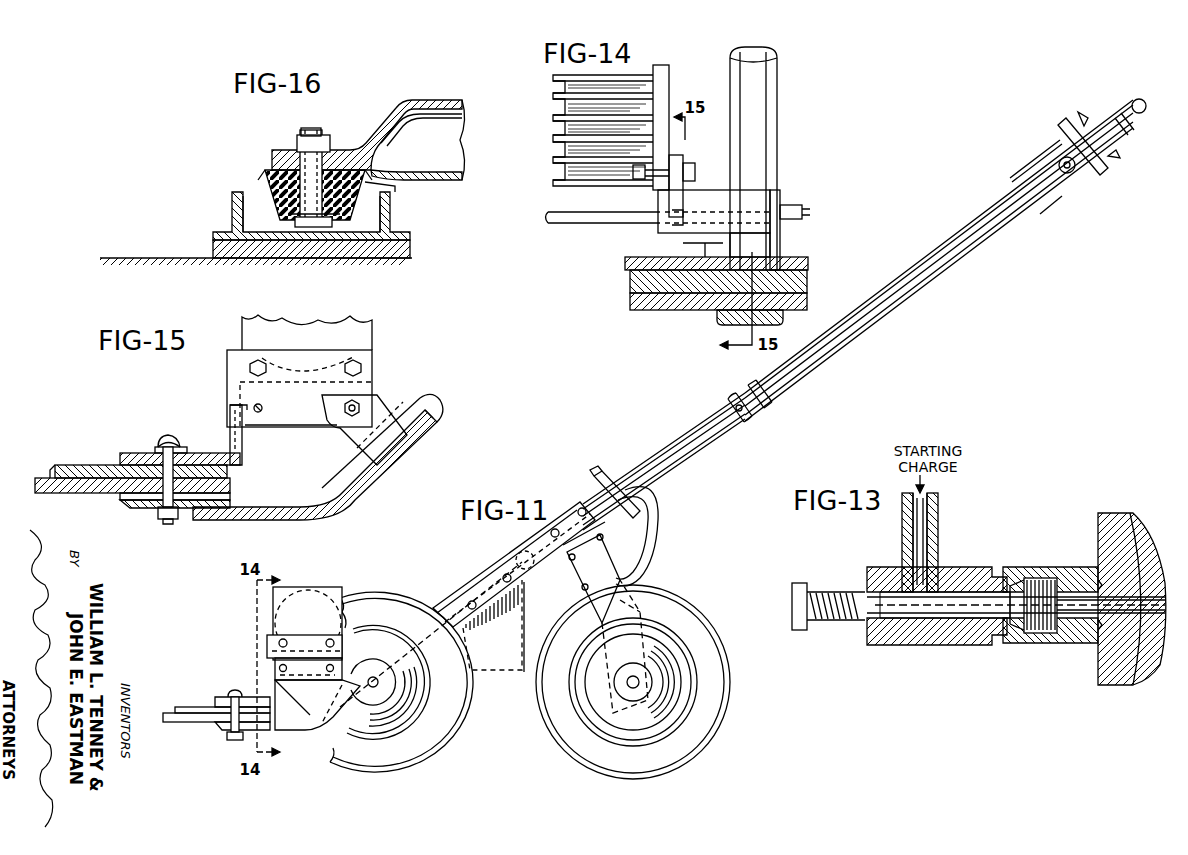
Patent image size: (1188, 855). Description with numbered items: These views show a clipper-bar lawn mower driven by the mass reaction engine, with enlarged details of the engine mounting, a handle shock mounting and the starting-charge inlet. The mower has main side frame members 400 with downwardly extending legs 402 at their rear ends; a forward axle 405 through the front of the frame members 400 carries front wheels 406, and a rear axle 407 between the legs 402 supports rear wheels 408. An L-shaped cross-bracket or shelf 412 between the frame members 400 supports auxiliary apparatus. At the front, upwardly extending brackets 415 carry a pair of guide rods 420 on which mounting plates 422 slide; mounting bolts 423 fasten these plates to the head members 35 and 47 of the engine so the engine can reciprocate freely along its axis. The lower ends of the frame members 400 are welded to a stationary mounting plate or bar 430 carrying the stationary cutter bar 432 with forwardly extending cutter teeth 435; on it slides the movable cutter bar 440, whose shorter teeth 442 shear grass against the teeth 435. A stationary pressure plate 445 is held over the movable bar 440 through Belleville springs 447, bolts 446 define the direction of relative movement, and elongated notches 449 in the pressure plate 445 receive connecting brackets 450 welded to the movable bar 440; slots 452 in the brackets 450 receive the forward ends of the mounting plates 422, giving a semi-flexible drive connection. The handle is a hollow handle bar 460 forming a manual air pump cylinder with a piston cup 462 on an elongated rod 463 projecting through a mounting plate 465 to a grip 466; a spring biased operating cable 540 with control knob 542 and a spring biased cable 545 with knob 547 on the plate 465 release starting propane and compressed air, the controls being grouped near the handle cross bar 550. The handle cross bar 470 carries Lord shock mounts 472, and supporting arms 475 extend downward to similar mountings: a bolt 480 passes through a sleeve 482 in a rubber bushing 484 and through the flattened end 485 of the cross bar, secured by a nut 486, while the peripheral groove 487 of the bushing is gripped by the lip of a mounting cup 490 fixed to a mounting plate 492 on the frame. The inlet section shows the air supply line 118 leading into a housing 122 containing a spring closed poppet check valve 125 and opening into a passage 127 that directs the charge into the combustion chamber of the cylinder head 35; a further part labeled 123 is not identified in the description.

In FIG. 13, the cylinder head member 35 is at (1112, 690).
In FIG. 14, the head member 47 is at (666, 80).
In FIG. 11, the head member 47 is at (322, 590).
In FIG. 13, the air supply line 118 is at (939, 521).
In FIG. 13, the housing 122 is at (955, 646).
In FIG. 13, the threaded plug 123 is at (1072, 610).
In FIG. 13, the spring closed poppet type check valve 125 is at (1024, 579).
In FIG. 13, the passage 127 is at (1133, 514).
In FIG. 14, the main side frame members 400 is at (764, 103).
In FIG. 15, the main side frame members 400 is at (424, 434).
In FIG. 11, the main side frame members 400 is at (494, 572).
In FIG. 11, the downwardly extending legs 402 is at (612, 562).
In FIG. 11, the forward axle 405 is at (380, 684).
In FIG. 11, the front wheels 406 is at (445, 733).
In FIG. 11, the rear axle 407 is at (640, 682).
In FIG. 11, the rear wheels 408 is at (703, 725).
In FIG. 11, the cross-bracket or shelf 412 is at (497, 664).
In FIG. 14, the upwardly extending brackets 415 is at (790, 236).
In FIG. 15, the upwardly extending brackets 415 is at (384, 413).
In FIG. 11, the upwardly extending brackets 415 is at (307, 722).
In FIG. 14, the guide rods 420 is at (580, 224).
In FIG. 15, the guide rods 420 is at (262, 412).
In FIG. 14, the mounting plates 422 is at (683, 160).
In FIG. 15, the mounting plates 422 is at (370, 392).
In FIG. 11, the mounting plates 422 is at (268, 646).
In FIG. 14, the mounting bolts 423 is at (700, 172).
In FIG. 15, the mounting bolts 423 is at (250, 366).
In FIG. 11, the mounting bolts 423 is at (281, 640).
In FIG. 14, the lower stationary mounting plate or bar 430 is at (676, 312).
In FIG. 15, the lower stationary mounting plate or bar 430 is at (140, 509).
In FIG. 11, the lower stationary mounting plate or bar 430 is at (225, 732).
In FIG. 14, the stationary cutter bar 432 is at (628, 301).
In FIG. 15, the stationary cutter bar 432 is at (88, 494).
In FIG. 15, the cutter teeth 435 is at (40, 494).
In FIG. 11, the cutter teeth 435 is at (165, 723).
In FIG. 14, the movable cutter bar 440 is at (631, 277).
In FIG. 15, the movable cutter bar 440 is at (105, 465).
In FIG. 15, the shorter forwardly projecting teeth 442 is at (58, 465).
In FIG. 11, the shorter forwardly projecting teeth 442 is at (180, 707).
In FIG. 14, the stationary pressure plate 445 is at (625, 264).
In FIG. 15, the stationary pressure plate 445 is at (135, 447).
In FIG. 15, the bolts 446 is at (172, 435).
In FIG. 11, the bolts 446 is at (236, 697).
In FIG. 15, the Belleville type springs 447 is at (188, 449).
In FIG. 14, the elongated notches 449 is at (703, 250).
In FIG. 14, the connecting brackets 450 is at (756, 200).
In FIG. 15, the connecting brackets 450 is at (241, 455).
In FIG. 14, the slots 452 is at (672, 213).
In FIG. 15, the slots 452 is at (230, 407).
In FIG. 11, the hollow handle bar 460 is at (940, 270).
In FIG. 11, the piston cup 462 is at (740, 424).
In FIG. 11, the elongated rod 463 is at (766, 408).
In FIG. 11, the mounting plate 465 is at (1063, 122).
In FIG. 11, the grip 466 is at (1136, 99).
In FIG. 16, the handle cross bar 470 is at (425, 100).
In FIG. 11, the handle cross bar 470 is at (623, 482).
In FIG. 16, the Lord shock mounts 472 is at (252, 172).
In FIG. 11, the supporting arms 475 is at (657, 529).
In FIG. 16, the bolt 480 is at (313, 228).
In FIG. 16, the sleeve 482 is at (345, 226).
In FIG. 16, the rubber bushing 484 is at (278, 168).
In FIG. 16, the flattened end 485 is at (343, 150).
In FIG. 16, the nut 486 is at (300, 142).
In FIG. 16, the peripheral groove 487 is at (396, 187).
In FIG. 16, the mounting cup 490 is at (232, 216).
In FIG. 16, the mounting plate 492 is at (238, 259).
In FIG. 11, the spring biased operating cable 540 is at (1044, 208).
In FIG. 11, the control knob 542 is at (1114, 162).
In FIG. 11, the spring biased cable 545 is at (1010, 180).
In FIG. 11, the knob 547 is at (1082, 116).
In FIG. 11, the handle cross bar 550 is at (1052, 148).